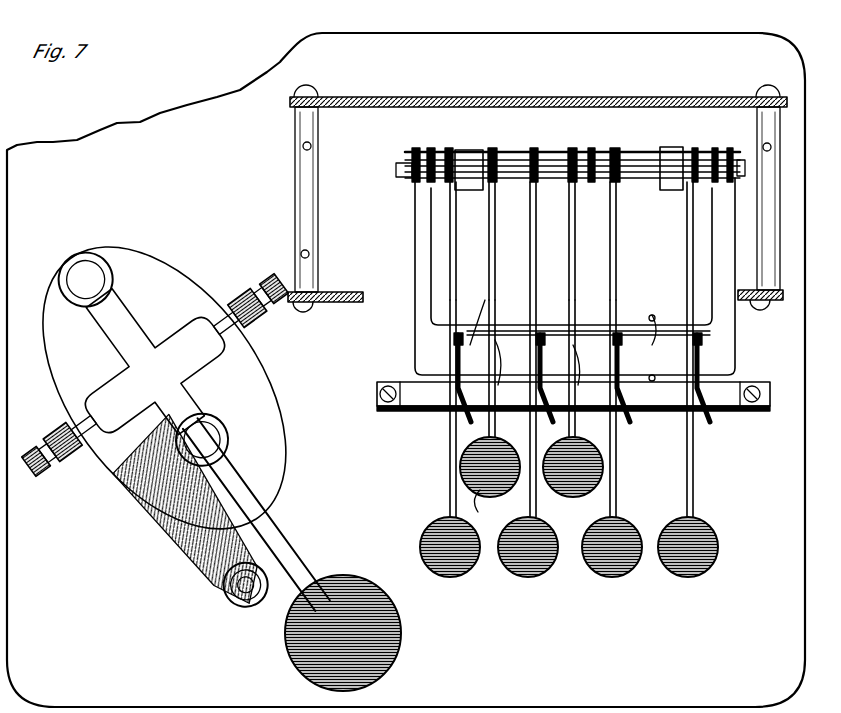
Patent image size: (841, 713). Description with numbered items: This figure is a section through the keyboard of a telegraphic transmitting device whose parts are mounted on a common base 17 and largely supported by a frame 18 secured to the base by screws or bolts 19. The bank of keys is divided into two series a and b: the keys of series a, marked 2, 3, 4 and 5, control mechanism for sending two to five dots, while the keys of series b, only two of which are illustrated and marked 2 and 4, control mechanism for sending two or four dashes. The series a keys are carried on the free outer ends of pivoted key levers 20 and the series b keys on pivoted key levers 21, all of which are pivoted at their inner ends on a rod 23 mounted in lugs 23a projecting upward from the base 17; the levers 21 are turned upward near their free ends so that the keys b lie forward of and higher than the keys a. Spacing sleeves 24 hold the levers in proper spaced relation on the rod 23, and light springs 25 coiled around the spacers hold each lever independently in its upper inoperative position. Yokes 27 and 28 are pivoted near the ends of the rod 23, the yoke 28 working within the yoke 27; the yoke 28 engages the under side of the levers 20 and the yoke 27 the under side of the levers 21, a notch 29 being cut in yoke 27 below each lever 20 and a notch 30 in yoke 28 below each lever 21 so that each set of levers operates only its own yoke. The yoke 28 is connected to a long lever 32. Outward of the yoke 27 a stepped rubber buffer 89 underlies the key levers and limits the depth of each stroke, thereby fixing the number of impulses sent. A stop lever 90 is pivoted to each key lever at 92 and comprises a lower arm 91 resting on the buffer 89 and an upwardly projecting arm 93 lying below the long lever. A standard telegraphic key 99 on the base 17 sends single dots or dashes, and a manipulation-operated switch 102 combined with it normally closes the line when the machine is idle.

The base 17 is at (722, 673).
The frame 18 is at (668, 95).
The screws or bolts 19 is at (312, 146).
The key levers 20 is at (534, 248).
The key levers 21 is at (570, 330).
The rod 23 is at (768, 93).
The lugs 23a is at (470, 152).
The spacing sleeves 24 is at (513, 162).
The light springs 25 is at (452, 215).
The yoke 27 is at (413, 313).
The yoke 28 is at (430, 270).
The notch 29 is at (452, 395).
The notch 30 is at (578, 349).
The long lever 32 is at (652, 378).
The rubber buffer 89 is at (428, 398).
The stop levers 90 is at (452, 338).
The lower arm 91 is at (628, 423).
The pivot 92 is at (467, 350).
The upwardly projecting arm 93 is at (452, 345).
The telegraphic key 99 is at (388, 624).
The manipulation-operated switch 102 is at (212, 556).
The key 2 is at (500, 497).
The key 3 is at (535, 577).
The key 4 is at (585, 497).
The key 5 is at (690, 577).
The series of keys a is at (420, 540).
The series of keys b is at (460, 453).